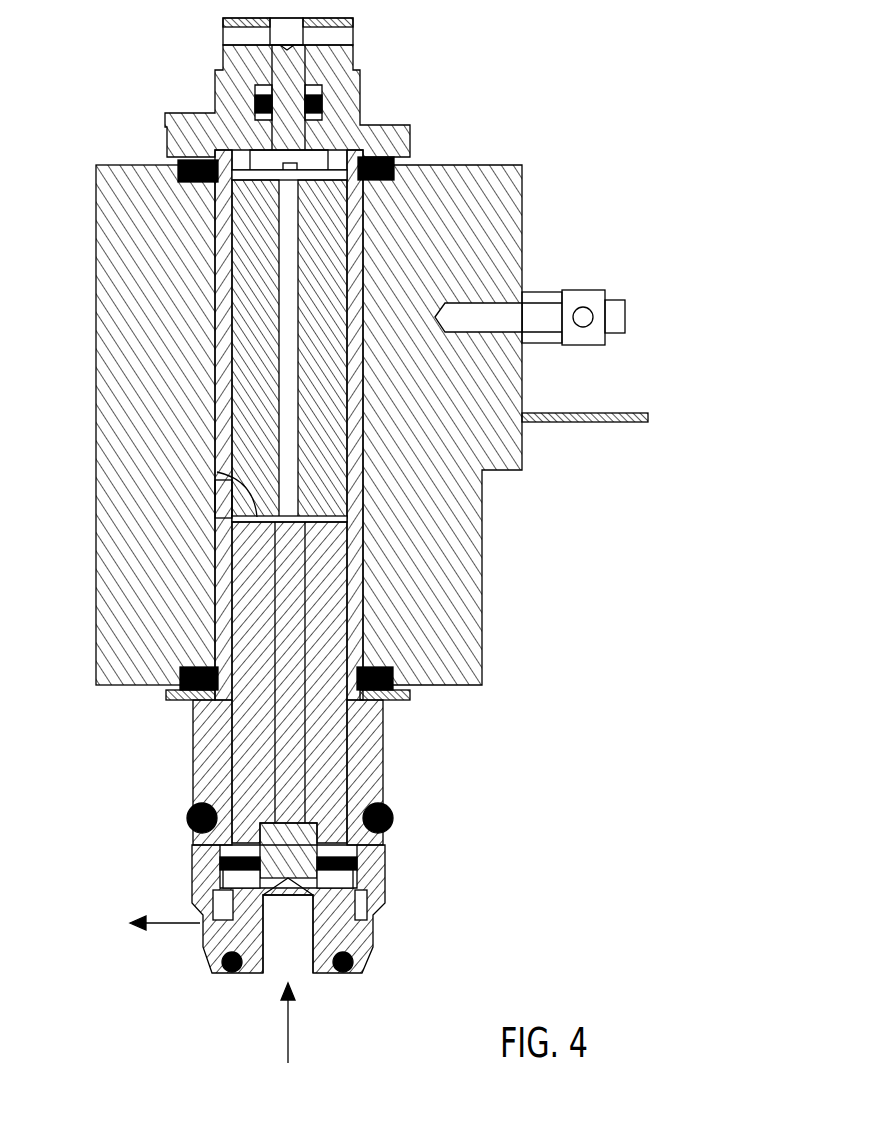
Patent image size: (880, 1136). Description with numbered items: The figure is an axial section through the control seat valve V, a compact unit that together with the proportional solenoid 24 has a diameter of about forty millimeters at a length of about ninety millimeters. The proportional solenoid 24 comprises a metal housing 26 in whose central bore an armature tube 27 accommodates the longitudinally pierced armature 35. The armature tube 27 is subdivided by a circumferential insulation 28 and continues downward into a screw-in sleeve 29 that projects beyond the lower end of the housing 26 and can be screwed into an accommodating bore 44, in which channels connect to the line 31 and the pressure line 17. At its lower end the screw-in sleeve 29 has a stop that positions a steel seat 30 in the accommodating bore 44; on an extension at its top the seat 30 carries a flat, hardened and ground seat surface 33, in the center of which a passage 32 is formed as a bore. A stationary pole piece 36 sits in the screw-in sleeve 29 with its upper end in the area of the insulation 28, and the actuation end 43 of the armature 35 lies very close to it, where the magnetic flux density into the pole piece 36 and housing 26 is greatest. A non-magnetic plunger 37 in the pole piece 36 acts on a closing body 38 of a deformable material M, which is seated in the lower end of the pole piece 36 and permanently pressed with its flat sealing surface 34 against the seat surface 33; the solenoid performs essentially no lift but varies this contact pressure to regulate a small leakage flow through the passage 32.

The pressure line 17 is at (222, 905).
The proportional solenoid 24 is at (160, 345).
The metal housing 26 is at (500, 234).
The armature tube 27 is at (223, 293).
The circumferential insulation 28 is at (232, 506).
The screw-in sleeve 29 is at (190, 736).
The seat 30 is at (357, 938).
The line 31 is at (277, 973).
The passage 32 is at (286, 885).
The seat surface 33 is at (232, 955).
The sealing surface 34 is at (273, 850).
The armature 35 is at (325, 222).
The pole piece 36 is at (340, 556).
The plunger 37 is at (285, 573).
The closing body 38 is at (315, 792).
The actuation end 43 is at (230, 477).
The accommodating bore 44 is at (343, 880).
The material M is at (215, 847).
The control seat valve V is at (548, 270).